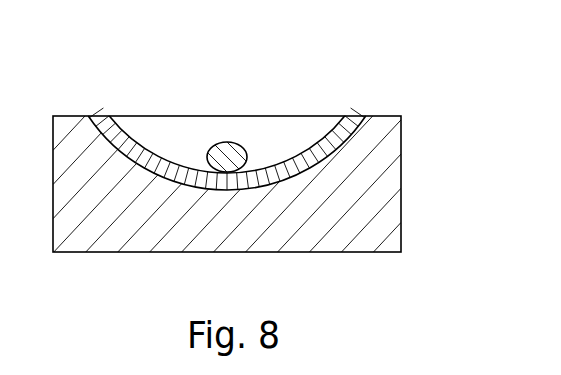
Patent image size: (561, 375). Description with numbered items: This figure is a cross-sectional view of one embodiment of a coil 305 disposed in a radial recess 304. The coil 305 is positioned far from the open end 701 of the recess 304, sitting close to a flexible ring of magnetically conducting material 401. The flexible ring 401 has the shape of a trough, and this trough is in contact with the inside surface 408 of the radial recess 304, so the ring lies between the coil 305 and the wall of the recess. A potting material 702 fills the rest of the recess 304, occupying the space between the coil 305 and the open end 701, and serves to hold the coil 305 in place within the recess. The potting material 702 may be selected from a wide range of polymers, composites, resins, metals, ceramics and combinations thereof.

The open end 701 is at (284, 105).
The potting material 702 is at (155, 125).
The coil 305 is at (203, 124).
The radial recess 304 is at (134, 176).
The inside surface 408 is at (262, 188).
The flexible ring of magnetically conducting material 401 is at (331, 157).